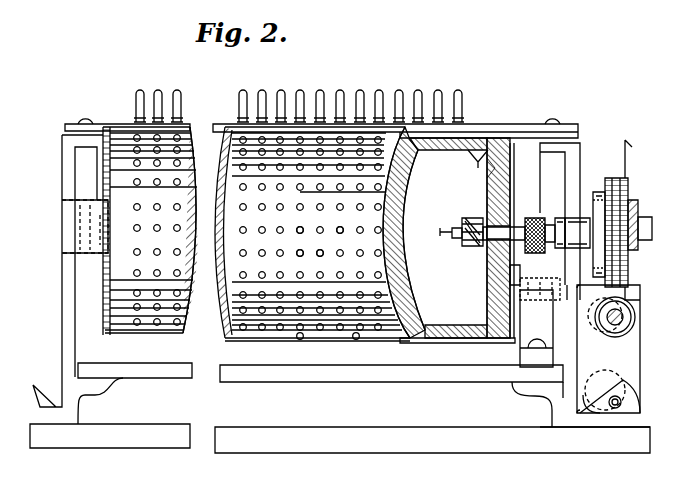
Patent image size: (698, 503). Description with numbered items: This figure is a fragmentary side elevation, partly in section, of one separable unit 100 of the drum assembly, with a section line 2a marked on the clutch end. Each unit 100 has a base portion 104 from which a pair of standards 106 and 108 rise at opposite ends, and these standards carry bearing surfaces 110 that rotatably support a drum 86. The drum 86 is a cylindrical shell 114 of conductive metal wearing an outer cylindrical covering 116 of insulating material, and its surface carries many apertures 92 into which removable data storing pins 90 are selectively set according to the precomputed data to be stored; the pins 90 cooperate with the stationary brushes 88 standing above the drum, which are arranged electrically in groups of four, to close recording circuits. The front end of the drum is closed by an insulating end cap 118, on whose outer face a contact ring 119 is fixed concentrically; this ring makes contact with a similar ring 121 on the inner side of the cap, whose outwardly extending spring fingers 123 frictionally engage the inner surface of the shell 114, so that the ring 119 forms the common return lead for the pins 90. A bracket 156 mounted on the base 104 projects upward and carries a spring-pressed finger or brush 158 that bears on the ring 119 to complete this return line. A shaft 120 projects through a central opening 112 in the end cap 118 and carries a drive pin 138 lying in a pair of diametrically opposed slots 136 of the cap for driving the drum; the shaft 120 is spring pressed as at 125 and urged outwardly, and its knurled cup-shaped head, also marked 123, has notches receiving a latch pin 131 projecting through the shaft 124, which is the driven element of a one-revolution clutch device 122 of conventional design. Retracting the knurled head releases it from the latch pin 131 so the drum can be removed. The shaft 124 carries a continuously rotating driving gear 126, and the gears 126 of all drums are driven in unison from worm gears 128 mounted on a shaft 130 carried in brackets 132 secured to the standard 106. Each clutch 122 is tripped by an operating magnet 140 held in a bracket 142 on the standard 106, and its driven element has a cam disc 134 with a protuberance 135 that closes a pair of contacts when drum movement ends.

The drum 86 is at (255, 338).
The stationary brushes 88 is at (155, 92).
The data storing pins 90 is at (340, 228).
The apertures 92 is at (320, 252).
The separable unit 100 is at (425, 372).
The base portion 104 is at (522, 395).
The standard 106 is at (581, 160).
The standard 108 is at (63, 160).
The bearing surfaces 110 is at (95, 255).
The central opening 112 is at (480, 248).
The cylindrical shell 114 is at (428, 150).
The outer cylindrical covering 116 is at (440, 150).
The end cap 118 is at (505, 150).
The contact ring 119 is at (505, 165).
The shaft 120 is at (453, 238).
The ring 121 is at (485, 185).
The one-revolution clutch device 122 is at (598, 192).
The spring fingers 123 is at (470, 158).
The shaft 124 is at (556, 216).
The spring 125 is at (465, 218).
The driving gear 126 is at (620, 190).
The worm gears 128 is at (635, 312).
The shaft 130 is at (631, 331).
The latch pin 131 is at (504, 233).
The brackets 132 is at (637, 337).
The cam disc 134 is at (638, 212).
The protuberance 135 is at (653, 230).
The slots 136 is at (513, 263).
The drive pin 138 is at (533, 218).
The operating magnet 140 is at (626, 385).
The bracket 142 is at (607, 378).
The bracket 156 is at (518, 355).
The spring-pressed finger or brush 158 is at (527, 346).
The section line 2a is at (640, 222).